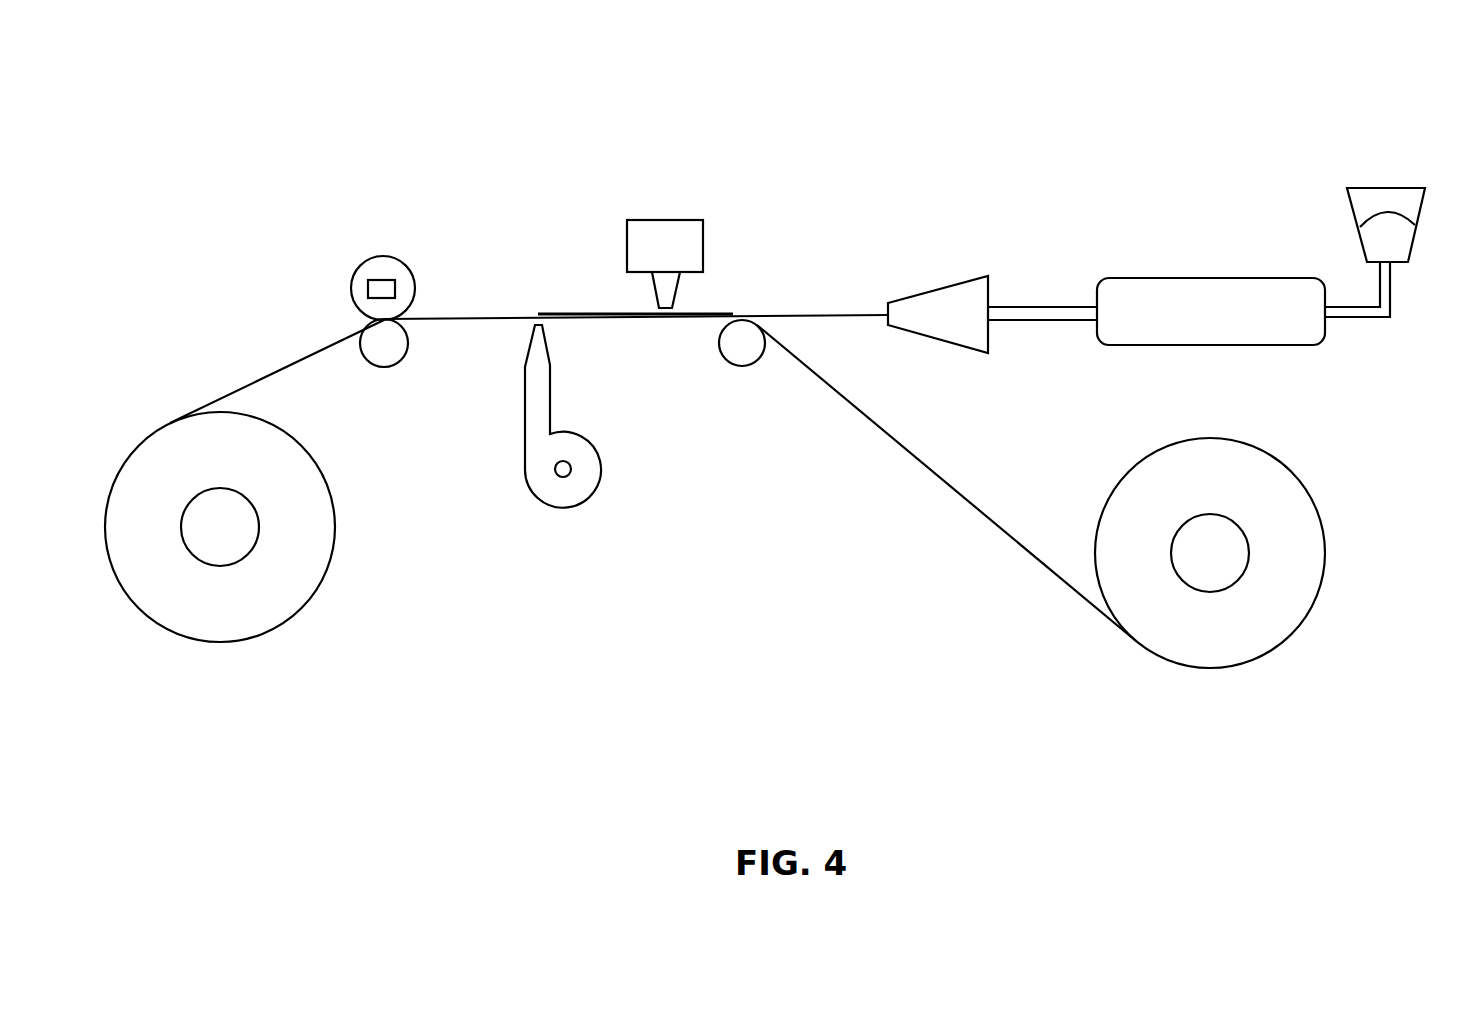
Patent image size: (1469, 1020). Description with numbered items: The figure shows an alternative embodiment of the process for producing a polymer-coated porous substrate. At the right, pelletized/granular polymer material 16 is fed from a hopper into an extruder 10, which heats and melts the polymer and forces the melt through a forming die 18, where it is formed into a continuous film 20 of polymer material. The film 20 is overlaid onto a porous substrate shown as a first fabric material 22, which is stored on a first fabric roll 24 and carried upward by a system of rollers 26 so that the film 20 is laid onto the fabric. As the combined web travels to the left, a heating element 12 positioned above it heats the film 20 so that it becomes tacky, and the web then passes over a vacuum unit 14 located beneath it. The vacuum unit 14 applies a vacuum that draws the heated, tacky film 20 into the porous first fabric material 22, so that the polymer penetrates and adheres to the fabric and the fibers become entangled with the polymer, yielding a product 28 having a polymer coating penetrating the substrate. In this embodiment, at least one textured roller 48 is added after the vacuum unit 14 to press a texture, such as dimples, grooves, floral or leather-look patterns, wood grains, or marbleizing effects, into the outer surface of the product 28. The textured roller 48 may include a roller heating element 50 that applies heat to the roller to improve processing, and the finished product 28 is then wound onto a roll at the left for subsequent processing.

The extruder 10 is at (1170, 278).
The heating element 12 is at (700, 216).
The vacuum unit 14 is at (588, 502).
The pelletized/granular polymer material 16 is at (1390, 235).
The forming die 18 is at (965, 277).
The continuous film of polymer material 20 is at (855, 315).
The first fabric material 22 is at (887, 428).
The first fabric roll 24 is at (1323, 525).
The system of rollers 26 is at (732, 367).
The product 28 is at (509, 315).
The textured roller 48 is at (352, 278).
The roller heating element 50 is at (383, 285).